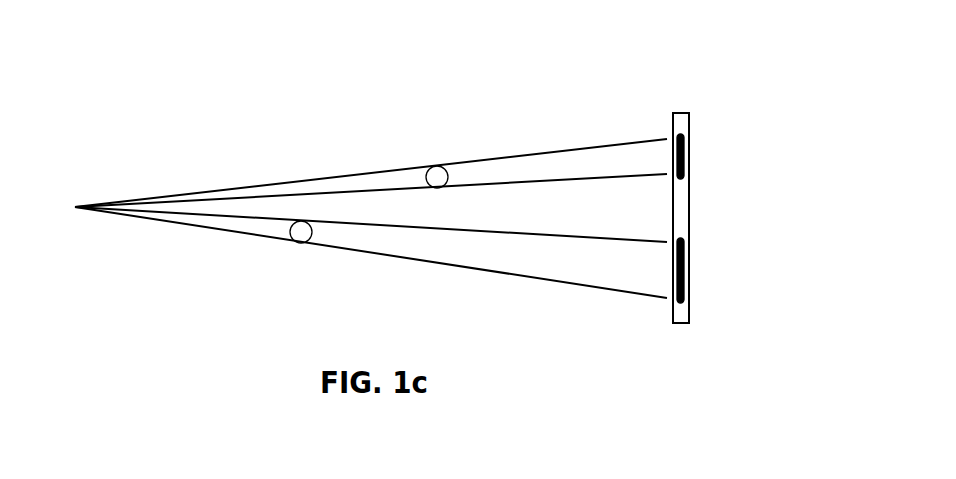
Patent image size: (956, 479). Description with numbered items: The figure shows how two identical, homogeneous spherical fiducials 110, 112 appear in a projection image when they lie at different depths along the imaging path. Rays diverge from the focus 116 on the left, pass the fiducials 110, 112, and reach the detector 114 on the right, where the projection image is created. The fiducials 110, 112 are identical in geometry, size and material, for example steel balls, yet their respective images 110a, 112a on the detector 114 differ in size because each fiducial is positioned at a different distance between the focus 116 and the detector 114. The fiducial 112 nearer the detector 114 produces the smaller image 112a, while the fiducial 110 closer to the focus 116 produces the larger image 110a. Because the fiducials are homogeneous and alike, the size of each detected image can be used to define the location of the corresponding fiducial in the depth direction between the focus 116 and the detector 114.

The focus 116 is at (351, 218).
The detector 114 is at (730, 195).
The image of fiducial 112a is at (741, 150).
The image of fiducial 110a is at (741, 263).
The homogeneous spherical fiducial 112 is at (453, 141).
The homogeneous spherical fiducial 110 is at (258, 270).